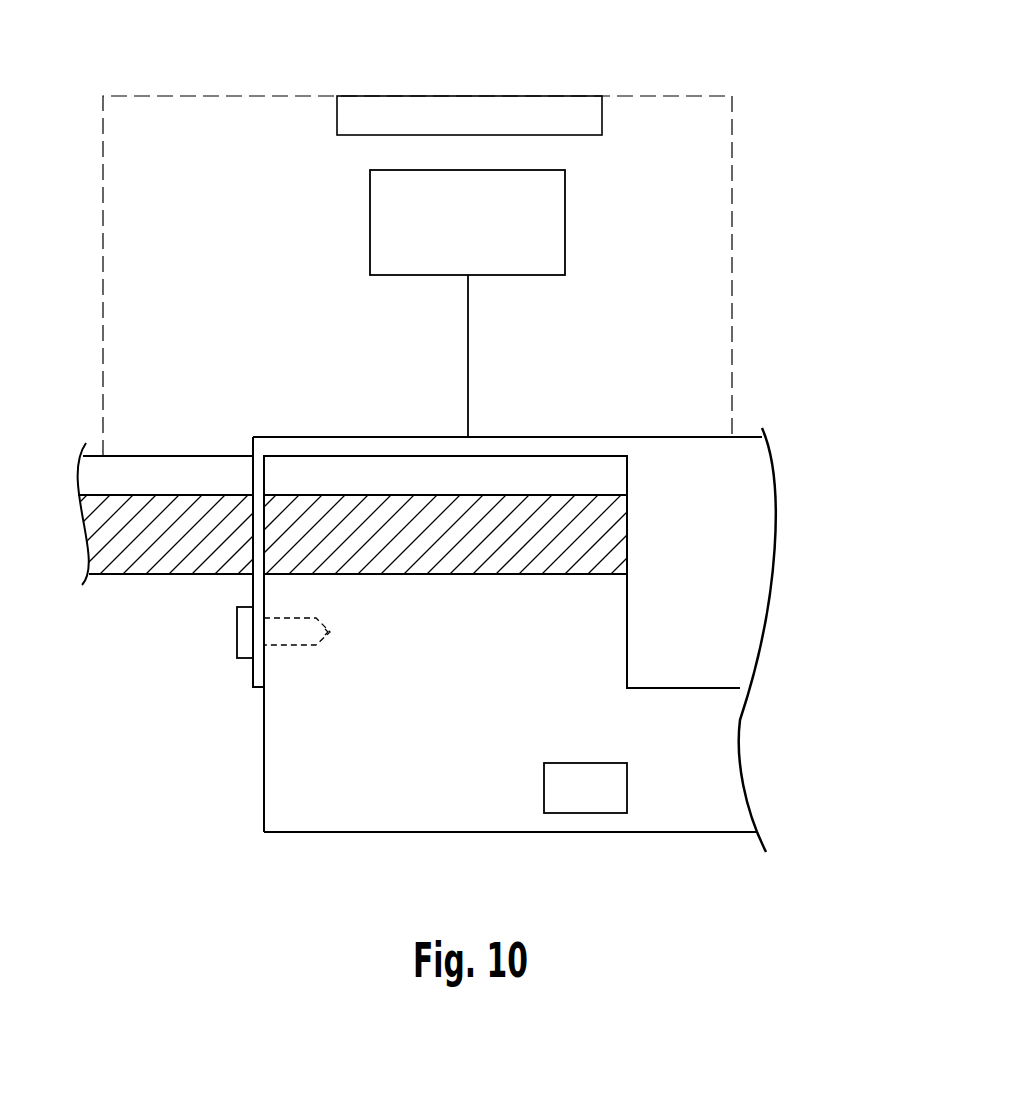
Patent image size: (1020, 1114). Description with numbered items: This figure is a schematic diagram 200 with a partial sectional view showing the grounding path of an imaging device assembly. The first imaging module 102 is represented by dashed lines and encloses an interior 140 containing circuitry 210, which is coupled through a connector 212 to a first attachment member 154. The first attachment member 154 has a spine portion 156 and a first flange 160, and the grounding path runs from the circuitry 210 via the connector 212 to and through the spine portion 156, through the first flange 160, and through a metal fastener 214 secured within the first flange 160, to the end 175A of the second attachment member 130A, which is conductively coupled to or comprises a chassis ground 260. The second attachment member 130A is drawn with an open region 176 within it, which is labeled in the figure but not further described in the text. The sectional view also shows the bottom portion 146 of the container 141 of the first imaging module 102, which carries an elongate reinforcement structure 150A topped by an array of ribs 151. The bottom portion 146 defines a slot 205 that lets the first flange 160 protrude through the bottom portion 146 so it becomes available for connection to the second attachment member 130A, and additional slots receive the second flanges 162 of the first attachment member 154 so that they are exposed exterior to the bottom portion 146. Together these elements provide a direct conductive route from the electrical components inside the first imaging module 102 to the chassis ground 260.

The first imaging module 102 is at (624, 92).
The interior 140 is at (246, 234).
The diagram 200 is at (804, 217).
The circuitry 210 is at (565, 245).
The connector 212 is at (468, 365).
The first attachment member 154 is at (602, 432).
The first flange 160 is at (254, 470).
The spine portion 156 is at (352, 447).
The elongate reinforcement structure 150A is at (116, 447).
The ribs 151 is at (158, 468).
The bottom portion 146 is at (185, 576).
The container 141 is at (124, 580).
The slot 205 is at (266, 493).
The metal fastener 214 is at (232, 632).
The interior cavity 176 is at (486, 702).
The end 175A is at (263, 771).
The second attachment member 130A is at (365, 838).
The second flange 162 is at (725, 637).
The chassis ground 260 is at (607, 814).